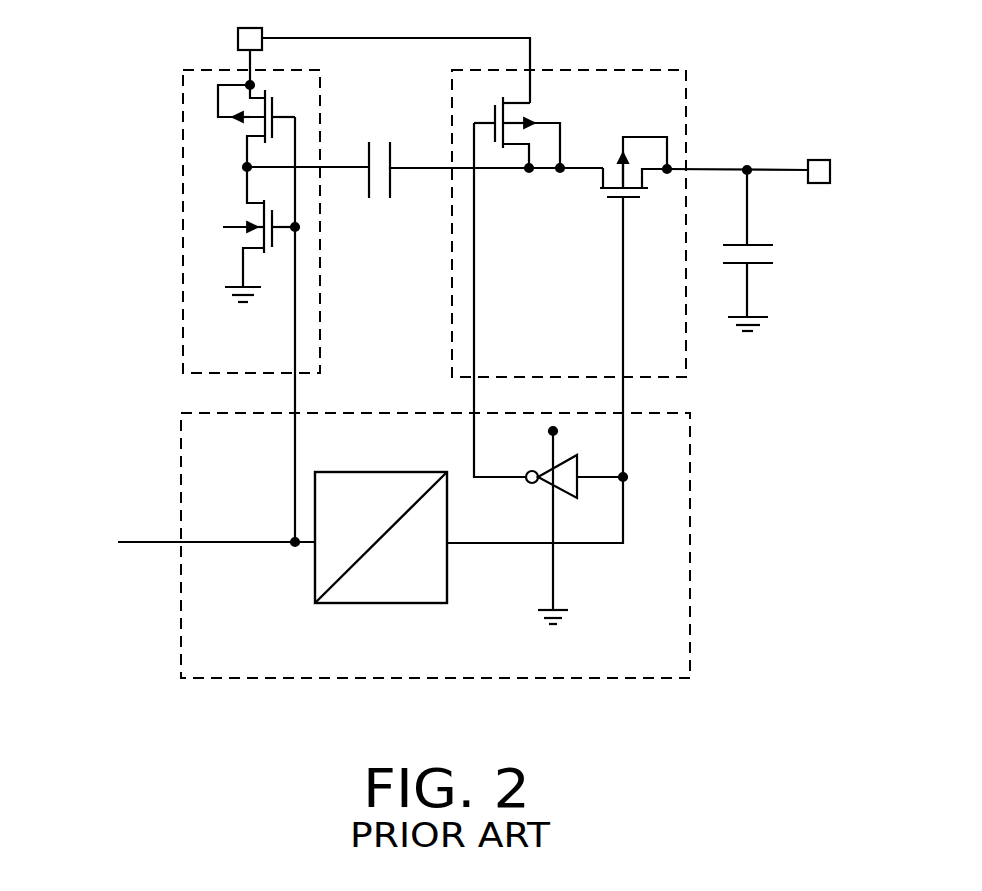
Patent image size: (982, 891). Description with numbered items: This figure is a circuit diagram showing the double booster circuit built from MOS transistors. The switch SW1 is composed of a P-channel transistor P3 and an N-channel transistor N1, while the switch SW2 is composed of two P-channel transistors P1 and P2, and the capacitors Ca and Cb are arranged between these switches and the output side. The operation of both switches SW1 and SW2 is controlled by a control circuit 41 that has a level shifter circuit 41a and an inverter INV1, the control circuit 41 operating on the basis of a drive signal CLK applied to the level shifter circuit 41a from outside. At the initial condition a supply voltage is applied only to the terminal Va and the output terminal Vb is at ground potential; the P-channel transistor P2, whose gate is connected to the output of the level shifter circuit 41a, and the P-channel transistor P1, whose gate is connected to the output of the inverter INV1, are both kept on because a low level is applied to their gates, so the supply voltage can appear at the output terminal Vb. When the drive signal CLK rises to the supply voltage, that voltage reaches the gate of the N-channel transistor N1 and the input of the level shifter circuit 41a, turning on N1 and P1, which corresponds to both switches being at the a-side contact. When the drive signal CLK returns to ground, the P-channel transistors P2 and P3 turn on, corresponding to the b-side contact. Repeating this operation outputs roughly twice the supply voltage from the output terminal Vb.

The supply voltage terminal Va is at (250, 25).
The output terminal Vb is at (820, 157).
The P-channel transistor P3 is at (242, 125).
The N-channel transistor N1 is at (213, 223).
The switch SW1 is at (183, 362).
The switch SW2 is at (688, 350).
The capacitor Ca is at (369, 178).
The capacitor Cb is at (760, 259).
The P-channel transistor P1 is at (513, 95).
The P-channel transistor P2 is at (668, 150).
The drive signal CLK is at (185, 544).
The control circuit 41 is at (660, 680).
The level shifter circuit 41a is at (315, 578).
The inverter INV1 is at (575, 505).